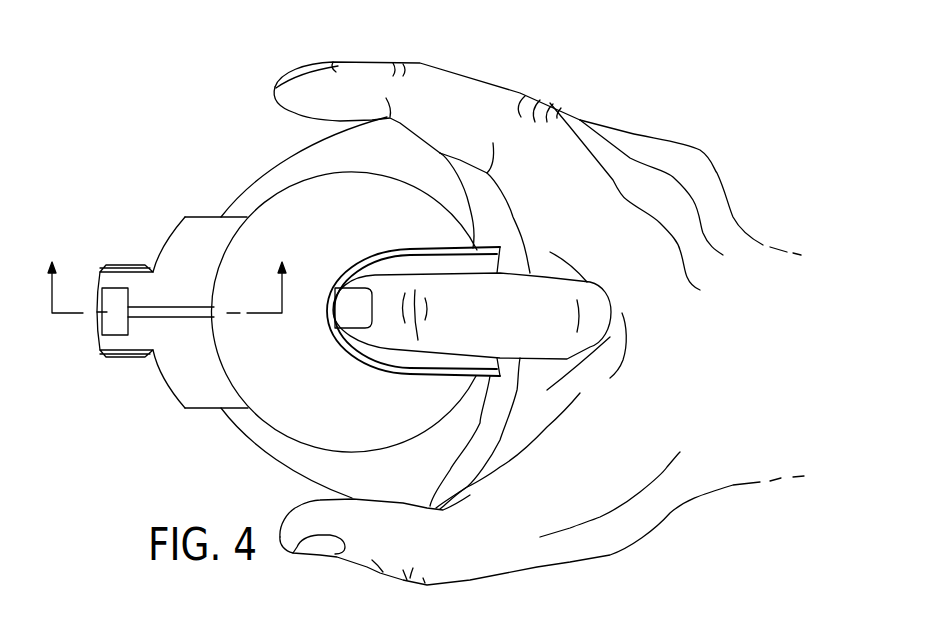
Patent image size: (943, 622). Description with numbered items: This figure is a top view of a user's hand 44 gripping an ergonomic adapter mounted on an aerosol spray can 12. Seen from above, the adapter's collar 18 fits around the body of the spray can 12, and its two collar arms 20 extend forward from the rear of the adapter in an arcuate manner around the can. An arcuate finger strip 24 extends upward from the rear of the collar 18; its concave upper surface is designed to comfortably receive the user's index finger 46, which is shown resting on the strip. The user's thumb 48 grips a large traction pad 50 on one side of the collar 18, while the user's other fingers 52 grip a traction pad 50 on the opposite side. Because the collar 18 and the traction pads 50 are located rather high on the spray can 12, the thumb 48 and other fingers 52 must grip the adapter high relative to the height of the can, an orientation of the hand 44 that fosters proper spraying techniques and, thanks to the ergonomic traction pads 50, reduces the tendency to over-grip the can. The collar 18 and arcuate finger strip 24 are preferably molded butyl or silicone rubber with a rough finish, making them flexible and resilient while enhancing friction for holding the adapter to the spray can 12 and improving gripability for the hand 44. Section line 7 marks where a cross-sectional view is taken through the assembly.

The section line 7- 7 is at (169, 277).
The aerosol spray can 12 is at (277, 361).
The collar 18 is at (350, 162).
The collar arms 20 is at (265, 191).
The arcuate finger strip 24 is at (443, 247).
The user's hand 44 is at (770, 262).
The index finger 46 is at (500, 320).
The thumb 48 is at (383, 562).
The traction pad 50 is at (367, 150).
The other fingers 52 is at (418, 63).